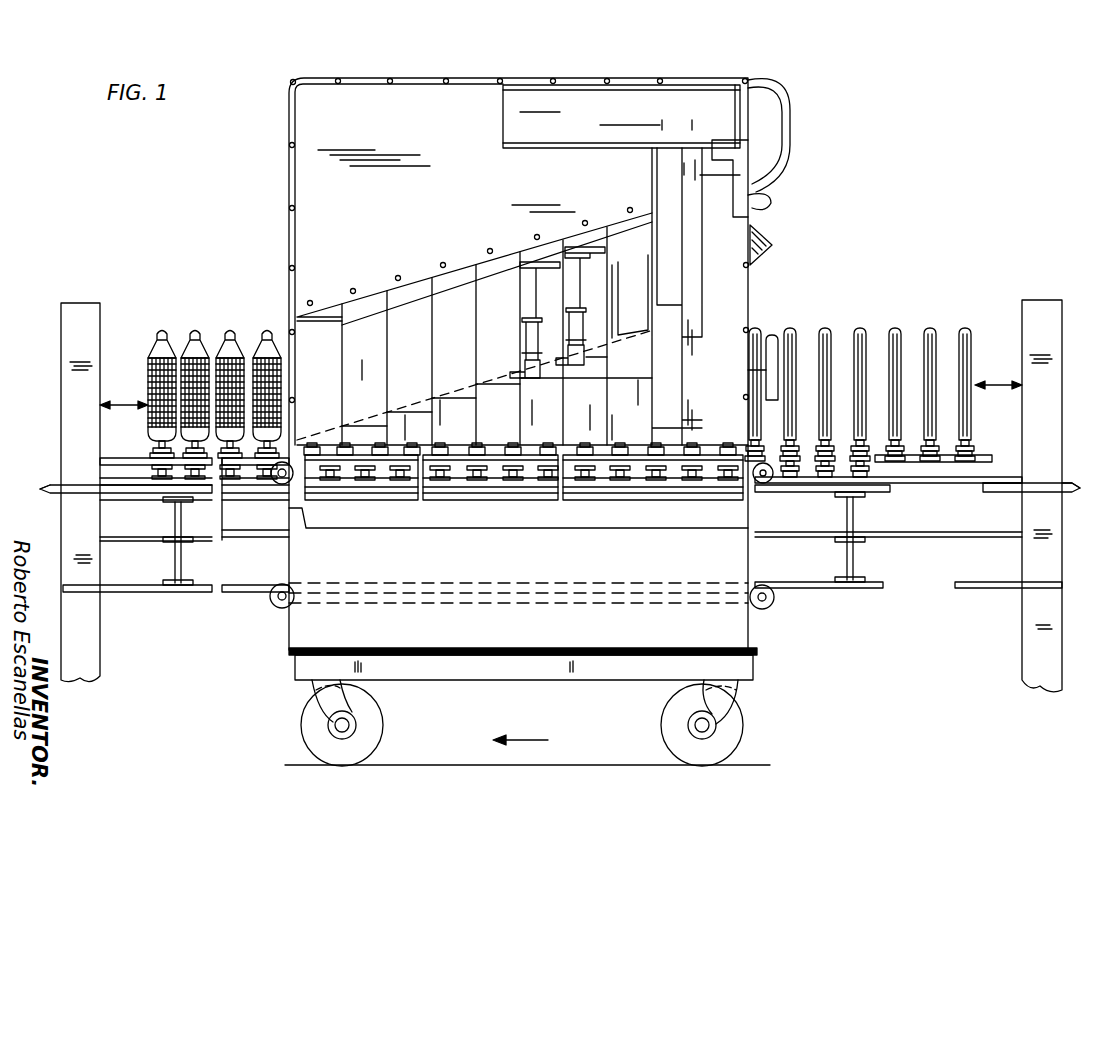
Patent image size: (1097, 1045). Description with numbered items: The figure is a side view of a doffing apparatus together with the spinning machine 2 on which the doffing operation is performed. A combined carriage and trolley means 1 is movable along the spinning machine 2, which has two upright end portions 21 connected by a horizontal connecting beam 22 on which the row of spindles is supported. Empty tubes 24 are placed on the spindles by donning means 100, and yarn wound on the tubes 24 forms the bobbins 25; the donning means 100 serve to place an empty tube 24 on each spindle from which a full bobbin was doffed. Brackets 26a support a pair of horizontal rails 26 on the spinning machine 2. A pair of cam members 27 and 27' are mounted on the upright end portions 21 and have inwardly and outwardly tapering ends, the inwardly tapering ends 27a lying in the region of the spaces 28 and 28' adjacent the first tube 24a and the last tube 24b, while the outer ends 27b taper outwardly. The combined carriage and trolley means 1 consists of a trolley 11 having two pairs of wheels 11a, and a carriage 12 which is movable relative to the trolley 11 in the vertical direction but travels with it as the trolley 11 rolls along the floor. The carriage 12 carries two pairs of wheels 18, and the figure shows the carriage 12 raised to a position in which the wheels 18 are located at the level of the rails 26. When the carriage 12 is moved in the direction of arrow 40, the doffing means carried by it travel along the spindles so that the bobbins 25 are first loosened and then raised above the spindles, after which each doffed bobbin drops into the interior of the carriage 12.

The combined carriage and trolley means 1 is at (286, 630).
The spinning machine 2 is at (52, 462).
The trolley 11 is at (497, 668).
The wheels 11a is at (375, 738).
The carriage 12 is at (747, 633).
The wheels 18 is at (772, 601).
The upright end portions 21 is at (78, 312).
The horizontal connecting beam 22 is at (134, 541).
The empty tubes 24 is at (823, 330).
The first tube 24a is at (968, 330).
The last tube 24b is at (166, 330).
The bobbins 25 is at (148, 367).
The horizontal rails 26 is at (778, 488).
The brackets 26a is at (182, 568).
The cam member 27 is at (1038, 466).
The cam member 27' is at (154, 475).
The inwardly tapering ends 27a is at (112, 489).
The bar end 27b is at (50, 494).
The space 28 is at (998, 402).
The space 28' is at (124, 422).
The arrow 40 is at (520, 737).
The donning means 100 is at (668, 298).